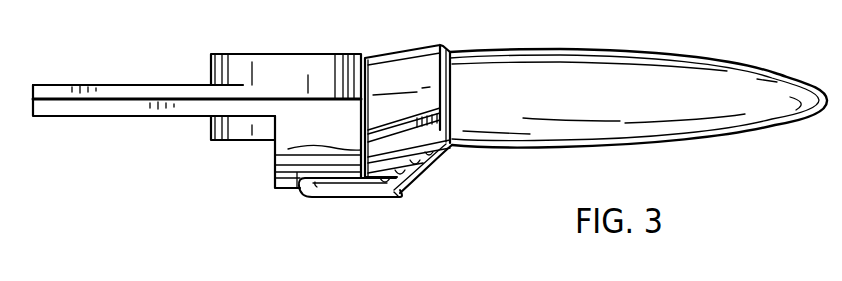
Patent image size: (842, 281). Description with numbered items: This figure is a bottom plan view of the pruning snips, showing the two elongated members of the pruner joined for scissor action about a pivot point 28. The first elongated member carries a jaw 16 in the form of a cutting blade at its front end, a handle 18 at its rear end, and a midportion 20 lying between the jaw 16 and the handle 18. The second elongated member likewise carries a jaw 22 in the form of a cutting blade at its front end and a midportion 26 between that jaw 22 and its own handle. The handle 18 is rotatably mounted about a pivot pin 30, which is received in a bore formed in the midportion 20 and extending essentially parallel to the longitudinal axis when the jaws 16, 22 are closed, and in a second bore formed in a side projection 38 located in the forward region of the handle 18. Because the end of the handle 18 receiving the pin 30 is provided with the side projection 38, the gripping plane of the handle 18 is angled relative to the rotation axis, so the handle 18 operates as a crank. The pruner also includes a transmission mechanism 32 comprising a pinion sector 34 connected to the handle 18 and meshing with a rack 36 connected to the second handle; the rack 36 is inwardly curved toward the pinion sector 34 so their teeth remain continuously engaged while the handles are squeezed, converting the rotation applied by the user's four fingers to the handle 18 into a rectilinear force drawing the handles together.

The jaw 16 is at (136, 108).
The handle 18 is at (685, 82).
The midportion 20 is at (245, 143).
The jaw 22 is at (134, 93).
The midportion 26 is at (322, 72).
The pivot point 28 is at (283, 52).
The pivot pin 30 is at (272, 158).
The transmission mechanism 32 is at (395, 197).
The pinion sector 34 is at (407, 152).
The rack 36 is at (360, 195).
The side projection 38 is at (458, 80).